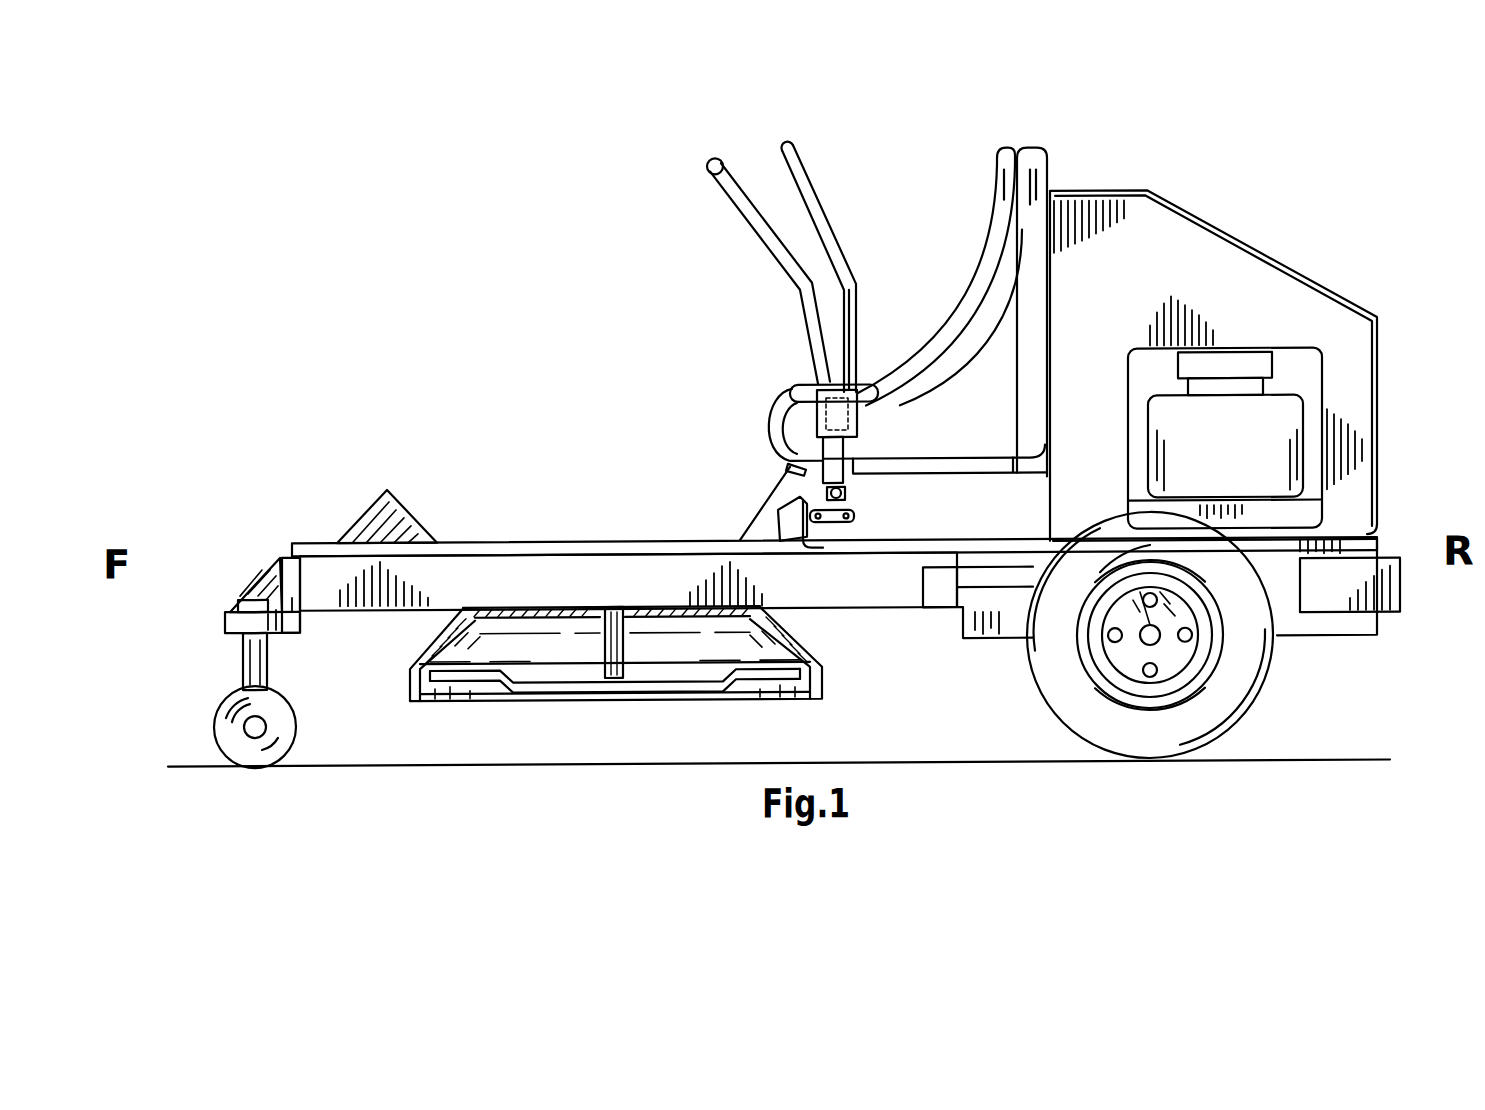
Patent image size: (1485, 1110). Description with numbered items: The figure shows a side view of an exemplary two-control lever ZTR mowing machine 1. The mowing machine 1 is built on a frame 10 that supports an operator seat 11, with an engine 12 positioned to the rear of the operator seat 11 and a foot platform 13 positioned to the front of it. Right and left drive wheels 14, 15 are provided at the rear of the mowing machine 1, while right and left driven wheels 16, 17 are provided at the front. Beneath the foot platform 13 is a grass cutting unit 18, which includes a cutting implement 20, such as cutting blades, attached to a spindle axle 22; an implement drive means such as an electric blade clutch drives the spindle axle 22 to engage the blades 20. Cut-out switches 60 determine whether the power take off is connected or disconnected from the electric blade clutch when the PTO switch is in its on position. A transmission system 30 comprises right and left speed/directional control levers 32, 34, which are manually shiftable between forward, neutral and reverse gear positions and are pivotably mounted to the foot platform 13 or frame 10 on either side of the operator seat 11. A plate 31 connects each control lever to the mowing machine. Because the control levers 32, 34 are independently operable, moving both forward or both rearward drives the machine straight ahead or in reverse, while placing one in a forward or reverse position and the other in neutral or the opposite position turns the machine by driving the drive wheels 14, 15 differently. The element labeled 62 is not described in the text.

The two-control lever ZTR mowing machine 1 is at (590, 367).
The frame 10 is at (1108, 318).
The operator seat 11 is at (990, 307).
The engine 12 is at (1270, 427).
The foot platform 13 is at (362, 568).
The right drive wheel 14 is at (1205, 635).
The left drive wheel 15 is at (1235, 657).
The right driven wheel 16 is at (208, 701).
The left driven wheel 17 is at (232, 726).
The grass cutting unit 18 is at (787, 690).
The cutting implement 20 is at (662, 690).
The spindle axle 22 is at (612, 640).
The transmission system 30 is at (1025, 573).
The plate 31 is at (855, 425).
The right speed/directional control lever 32 is at (706, 168).
The left speed/directional control lever 34 is at (800, 144).
The cut-out switch 60 is at (792, 507).
The pedal linkage 62 is at (790, 469).